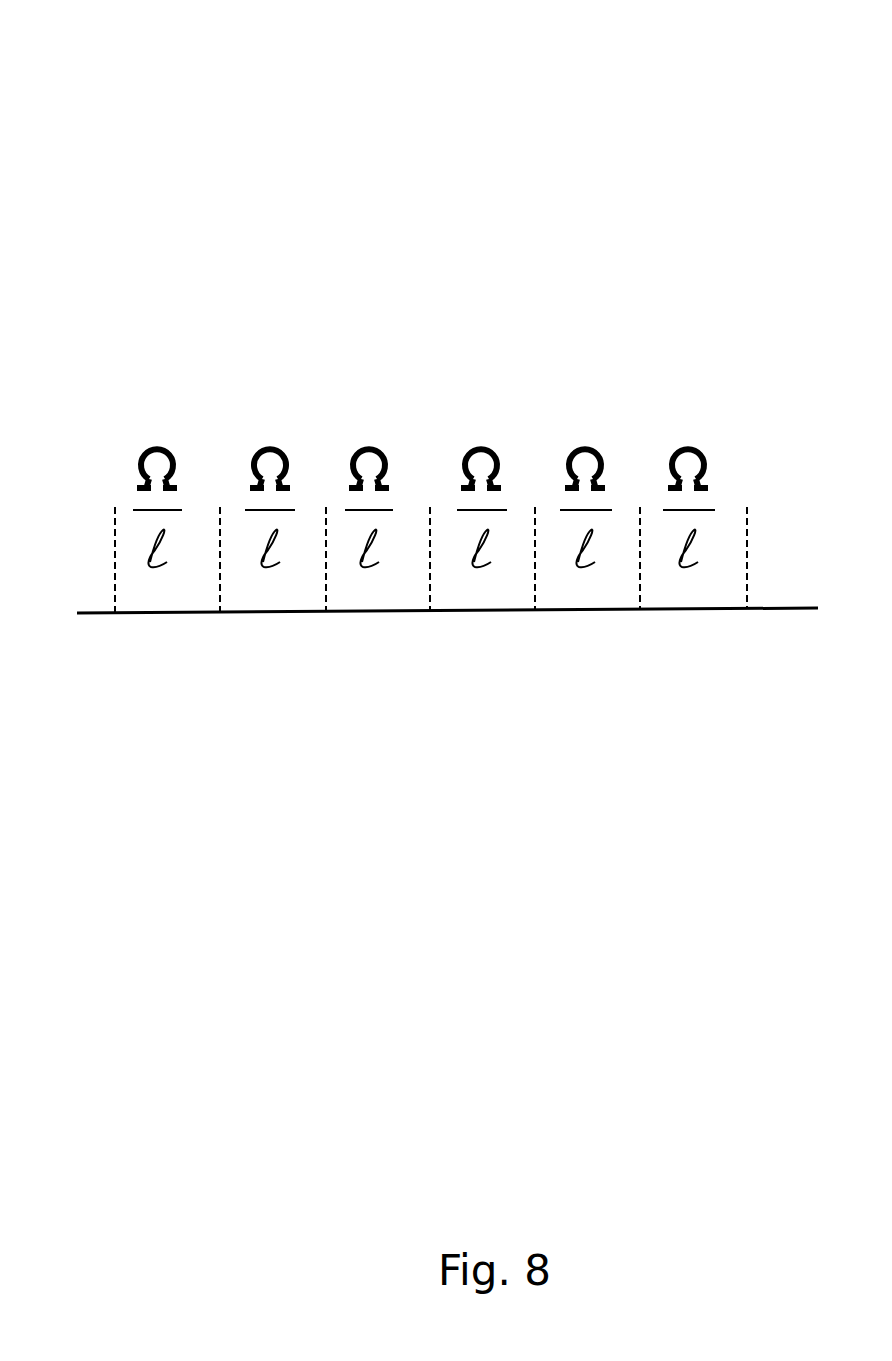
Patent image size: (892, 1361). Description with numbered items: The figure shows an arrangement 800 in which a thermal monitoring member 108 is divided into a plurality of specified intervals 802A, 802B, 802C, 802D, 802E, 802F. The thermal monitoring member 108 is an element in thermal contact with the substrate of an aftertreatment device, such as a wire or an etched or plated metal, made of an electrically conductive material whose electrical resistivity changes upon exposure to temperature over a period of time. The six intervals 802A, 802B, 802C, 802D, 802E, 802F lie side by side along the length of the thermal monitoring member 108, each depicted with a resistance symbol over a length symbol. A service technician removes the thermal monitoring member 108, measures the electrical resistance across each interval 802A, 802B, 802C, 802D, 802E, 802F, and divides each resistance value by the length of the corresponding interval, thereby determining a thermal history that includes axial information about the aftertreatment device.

The resonator array 800 is at (84, 79).
The specified interval 802A is at (159, 438).
The specified interval 802B is at (268, 438).
The specified interval 802C is at (369, 438).
The specified interval 802D is at (472, 438).
The specified interval 802E is at (582, 438).
The specified interval 802F is at (688, 438).
The thermal monitoring member 108 is at (783, 613).